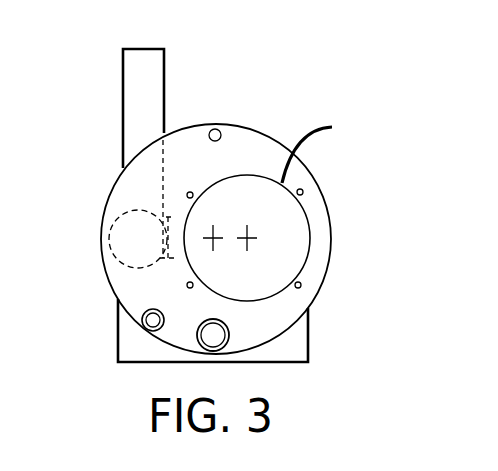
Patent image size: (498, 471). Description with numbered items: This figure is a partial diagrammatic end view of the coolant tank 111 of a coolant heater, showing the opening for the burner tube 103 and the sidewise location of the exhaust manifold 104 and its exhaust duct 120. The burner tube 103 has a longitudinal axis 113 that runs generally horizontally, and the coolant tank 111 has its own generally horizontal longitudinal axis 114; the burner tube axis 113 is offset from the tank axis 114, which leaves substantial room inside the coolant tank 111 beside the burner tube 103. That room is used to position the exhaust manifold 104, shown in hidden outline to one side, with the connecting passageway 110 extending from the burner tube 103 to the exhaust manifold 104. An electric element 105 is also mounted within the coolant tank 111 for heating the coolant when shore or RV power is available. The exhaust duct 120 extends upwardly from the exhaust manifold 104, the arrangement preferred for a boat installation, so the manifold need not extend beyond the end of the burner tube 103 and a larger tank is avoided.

The burner tube 103 is at (341, 147).
The exhaust manifold 104 is at (118, 258).
The electric element 105 is at (229, 331).
The passageway 110 is at (176, 258).
The coolant tank 111 is at (272, 135).
The longitudinal axis 113 is at (252, 241).
The longitudinal axis 114 is at (205, 240).
The exhaust duct 120 is at (123, 88).